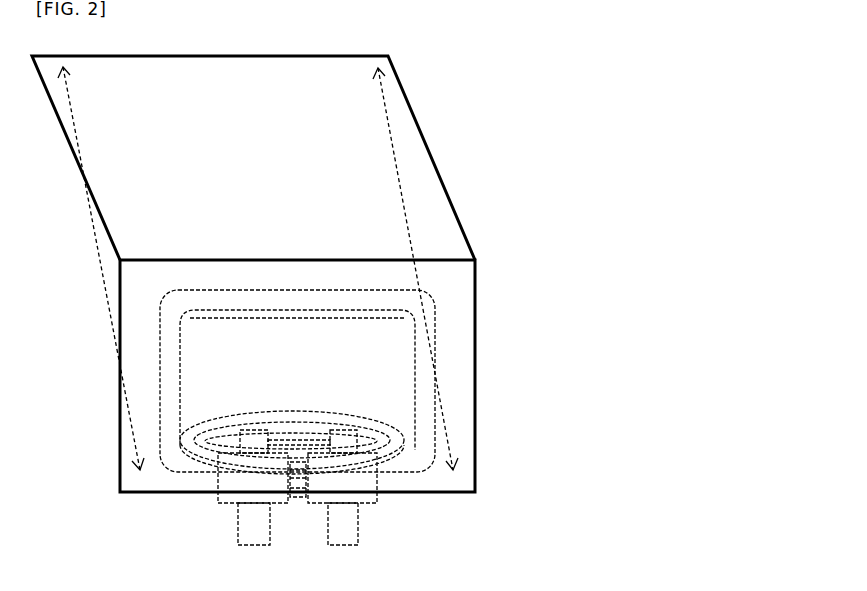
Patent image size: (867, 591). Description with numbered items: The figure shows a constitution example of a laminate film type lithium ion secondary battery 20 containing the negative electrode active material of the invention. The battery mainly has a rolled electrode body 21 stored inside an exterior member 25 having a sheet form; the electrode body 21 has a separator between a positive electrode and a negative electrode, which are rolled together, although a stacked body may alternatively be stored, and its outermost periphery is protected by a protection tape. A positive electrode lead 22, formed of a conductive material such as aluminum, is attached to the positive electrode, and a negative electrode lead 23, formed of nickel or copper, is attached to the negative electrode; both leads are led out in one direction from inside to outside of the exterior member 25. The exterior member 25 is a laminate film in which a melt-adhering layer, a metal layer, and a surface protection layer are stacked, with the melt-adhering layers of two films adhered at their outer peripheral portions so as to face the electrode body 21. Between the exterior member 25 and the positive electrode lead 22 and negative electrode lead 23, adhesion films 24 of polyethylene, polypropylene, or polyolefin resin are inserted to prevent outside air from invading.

The laminate film type lithium ion secondary battery 20 is at (427, 70).
The rolled electrode body 21 is at (377, 366).
The positive electrode lead 22 is at (250, 530).
The negative electrode lead 23 is at (340, 530).
The adhesion film 24 is at (362, 485).
The exterior member 25 is at (318, 165).